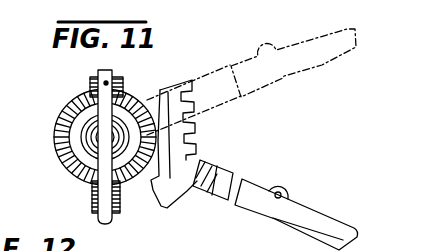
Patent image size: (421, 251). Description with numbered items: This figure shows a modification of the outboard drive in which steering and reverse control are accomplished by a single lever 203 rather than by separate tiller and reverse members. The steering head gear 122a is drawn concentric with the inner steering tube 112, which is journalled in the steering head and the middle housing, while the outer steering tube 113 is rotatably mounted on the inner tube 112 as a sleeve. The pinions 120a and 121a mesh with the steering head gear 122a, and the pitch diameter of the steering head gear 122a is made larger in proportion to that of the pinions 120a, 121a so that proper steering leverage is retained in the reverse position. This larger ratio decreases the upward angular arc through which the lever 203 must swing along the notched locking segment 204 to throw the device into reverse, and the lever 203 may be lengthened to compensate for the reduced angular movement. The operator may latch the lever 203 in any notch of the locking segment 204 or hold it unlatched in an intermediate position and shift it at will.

The inner steering tube 112 is at (112, 223).
The outer steering tube 113 is at (115, 208).
The pinion 120a is at (118, 83).
The pinion 121a is at (90, 187).
The steering head gear 122a is at (62, 165).
The lever 203 is at (228, 178).
The locking segment 204 is at (200, 142).